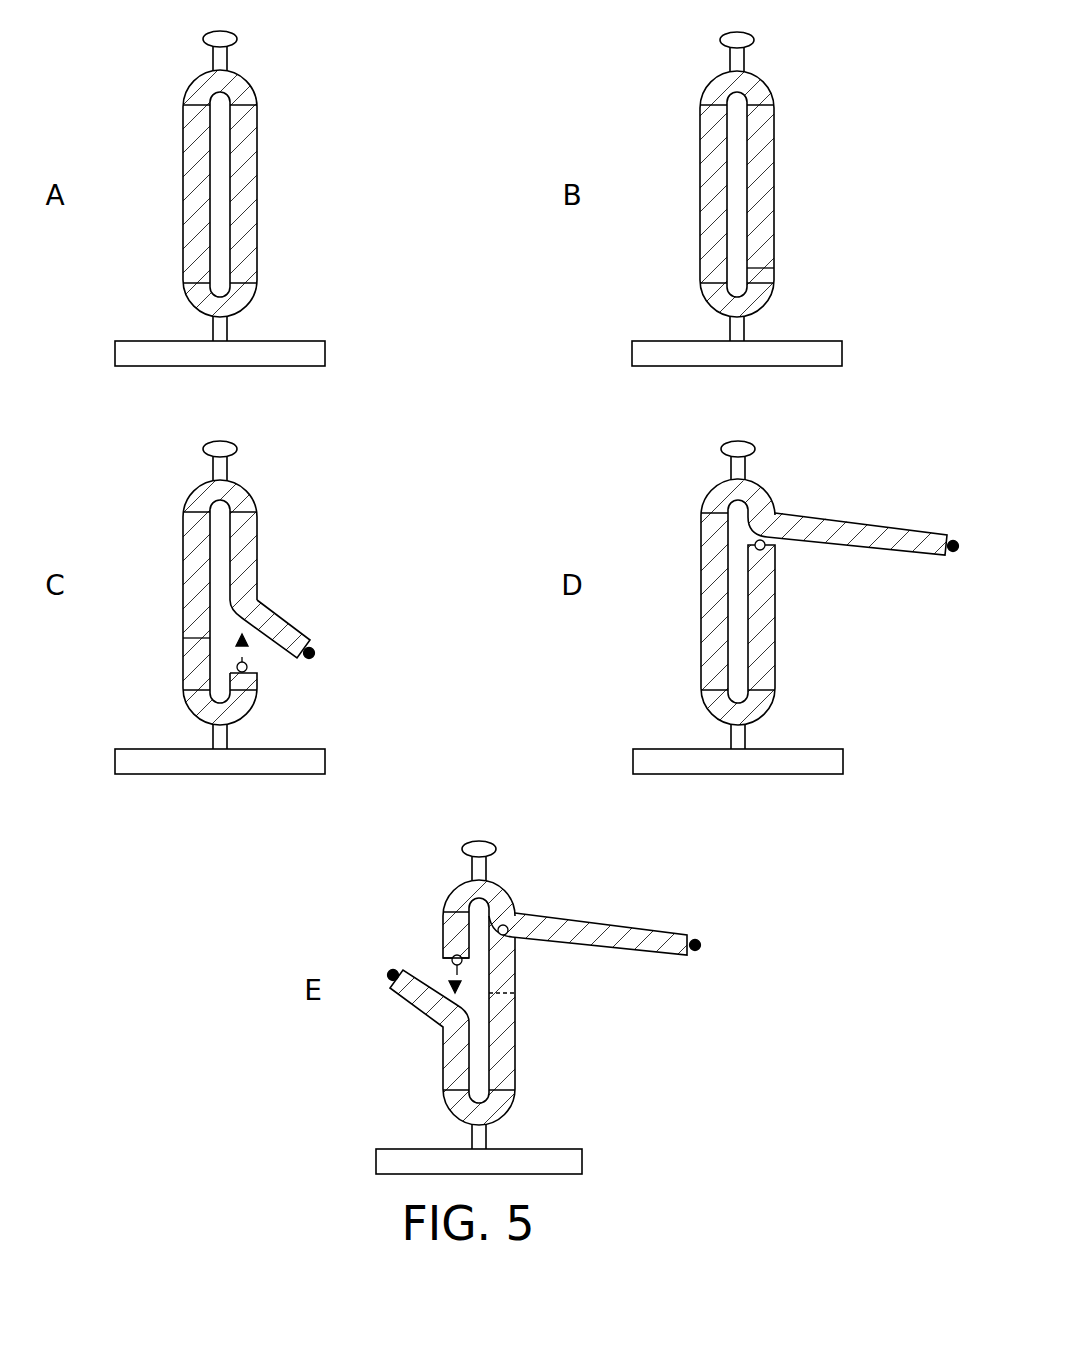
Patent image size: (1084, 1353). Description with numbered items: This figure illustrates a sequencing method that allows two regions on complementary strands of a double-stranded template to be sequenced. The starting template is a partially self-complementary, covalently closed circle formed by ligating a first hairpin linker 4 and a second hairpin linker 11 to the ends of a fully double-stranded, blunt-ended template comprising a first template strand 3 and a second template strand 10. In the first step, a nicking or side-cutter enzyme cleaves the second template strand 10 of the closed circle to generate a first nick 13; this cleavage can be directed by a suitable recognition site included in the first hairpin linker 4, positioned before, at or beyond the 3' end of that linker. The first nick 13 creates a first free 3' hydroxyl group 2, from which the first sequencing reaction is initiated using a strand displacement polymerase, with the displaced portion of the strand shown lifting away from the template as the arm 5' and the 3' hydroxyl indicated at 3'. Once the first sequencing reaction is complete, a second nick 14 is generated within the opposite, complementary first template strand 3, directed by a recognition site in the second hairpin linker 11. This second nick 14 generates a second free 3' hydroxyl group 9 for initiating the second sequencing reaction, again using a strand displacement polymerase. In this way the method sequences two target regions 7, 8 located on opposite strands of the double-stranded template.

The first free 3' hydroxyl group 2 is at (252, 676).
The first template strand 3 is at (169, 194).
The pivot ball 3' is at (518, 757).
The first hairpin linker 4 is at (184, 296).
The pivoting arm segment 5' is at (595, 727).
The first target region 7 is at (177, 638).
The second target region 8 is at (523, 943).
The second free 3' hydroxyl group 9 is at (448, 962).
The second template strand 10 is at (267, 105).
The second hairpin linker 11 is at (243, 79).
The first nick 13 is at (786, 268).
The second nick 14 is at (690, 560).